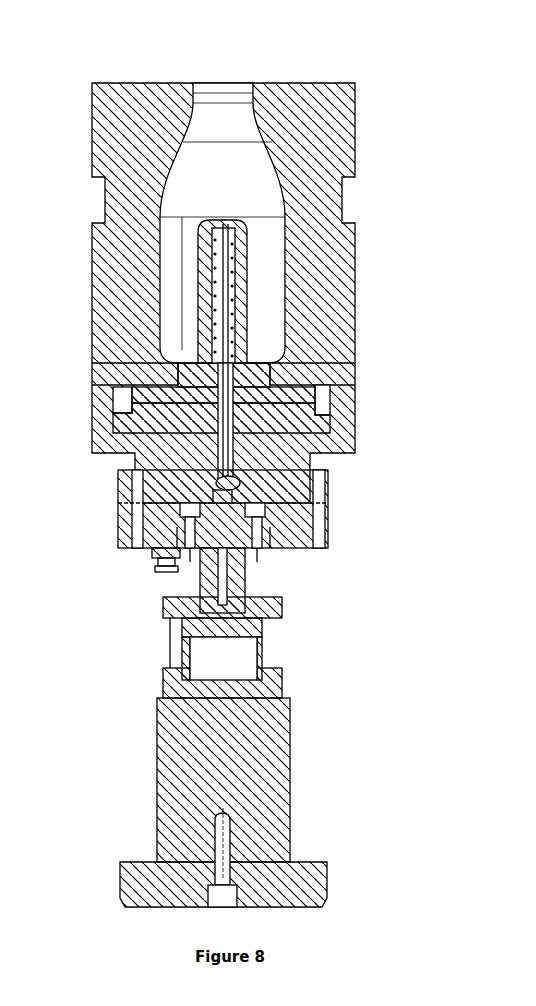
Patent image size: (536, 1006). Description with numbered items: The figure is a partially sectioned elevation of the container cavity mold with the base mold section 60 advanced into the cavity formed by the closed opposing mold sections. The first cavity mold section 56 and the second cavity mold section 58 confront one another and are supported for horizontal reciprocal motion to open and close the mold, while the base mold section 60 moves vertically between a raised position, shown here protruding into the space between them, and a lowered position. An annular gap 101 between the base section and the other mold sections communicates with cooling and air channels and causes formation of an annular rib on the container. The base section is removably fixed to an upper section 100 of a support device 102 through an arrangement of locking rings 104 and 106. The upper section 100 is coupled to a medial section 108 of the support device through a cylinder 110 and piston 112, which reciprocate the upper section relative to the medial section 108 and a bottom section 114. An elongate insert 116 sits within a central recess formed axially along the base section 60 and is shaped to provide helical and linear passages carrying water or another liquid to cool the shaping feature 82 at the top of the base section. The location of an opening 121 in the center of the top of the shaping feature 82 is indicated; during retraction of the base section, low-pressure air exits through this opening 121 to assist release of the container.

The first cavity mold section 56 is at (90, 127).
The second cavity mold section 58 is at (337, 150).
The base mold section 60 is at (100, 366).
The shaping feature 82 is at (247, 267).
The upper section 100 is at (170, 477).
The annular gap 101 is at (270, 370).
The support device 102 is at (147, 610).
The locking ring 104 is at (357, 393).
The locking ring 106 is at (313, 432).
The medial section 108 is at (290, 725).
The cylinder 110 is at (267, 647).
The piston 112 is at (250, 568).
The bottom section 114 is at (118, 862).
The elongate insert 116 is at (247, 307).
The opening 121 is at (223, 222).